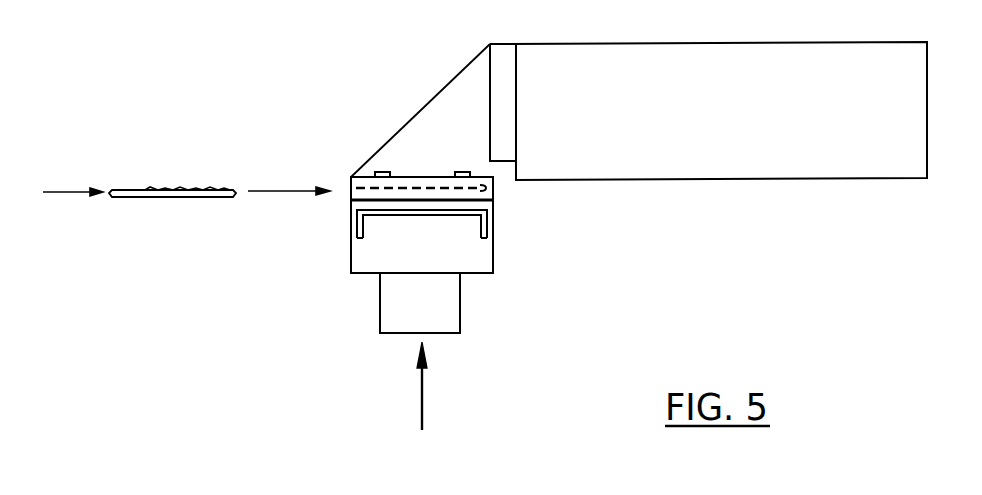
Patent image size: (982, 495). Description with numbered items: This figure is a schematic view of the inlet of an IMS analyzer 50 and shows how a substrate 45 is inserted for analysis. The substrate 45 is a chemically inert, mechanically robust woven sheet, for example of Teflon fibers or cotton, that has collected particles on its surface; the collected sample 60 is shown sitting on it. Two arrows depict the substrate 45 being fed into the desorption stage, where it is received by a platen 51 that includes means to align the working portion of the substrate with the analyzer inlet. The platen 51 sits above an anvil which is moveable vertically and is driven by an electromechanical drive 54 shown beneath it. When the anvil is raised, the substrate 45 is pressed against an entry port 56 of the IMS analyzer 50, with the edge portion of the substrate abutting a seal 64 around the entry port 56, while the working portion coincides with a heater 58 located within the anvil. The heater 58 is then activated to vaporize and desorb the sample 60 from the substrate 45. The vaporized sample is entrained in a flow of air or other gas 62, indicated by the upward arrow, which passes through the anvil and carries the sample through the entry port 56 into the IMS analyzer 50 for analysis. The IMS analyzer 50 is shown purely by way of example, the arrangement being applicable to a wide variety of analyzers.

The substrate 45 is at (178, 197).
The IMS analyzer 50 is at (727, 120).
The platen 51 is at (493, 188).
The electromechanical drive 54 is at (434, 311).
The entry port 56 is at (438, 118).
The heater 58 is at (353, 234).
The sample 60 is at (180, 190).
The flow of air or other gas 62 is at (422, 390).
The seal 64 is at (383, 172).